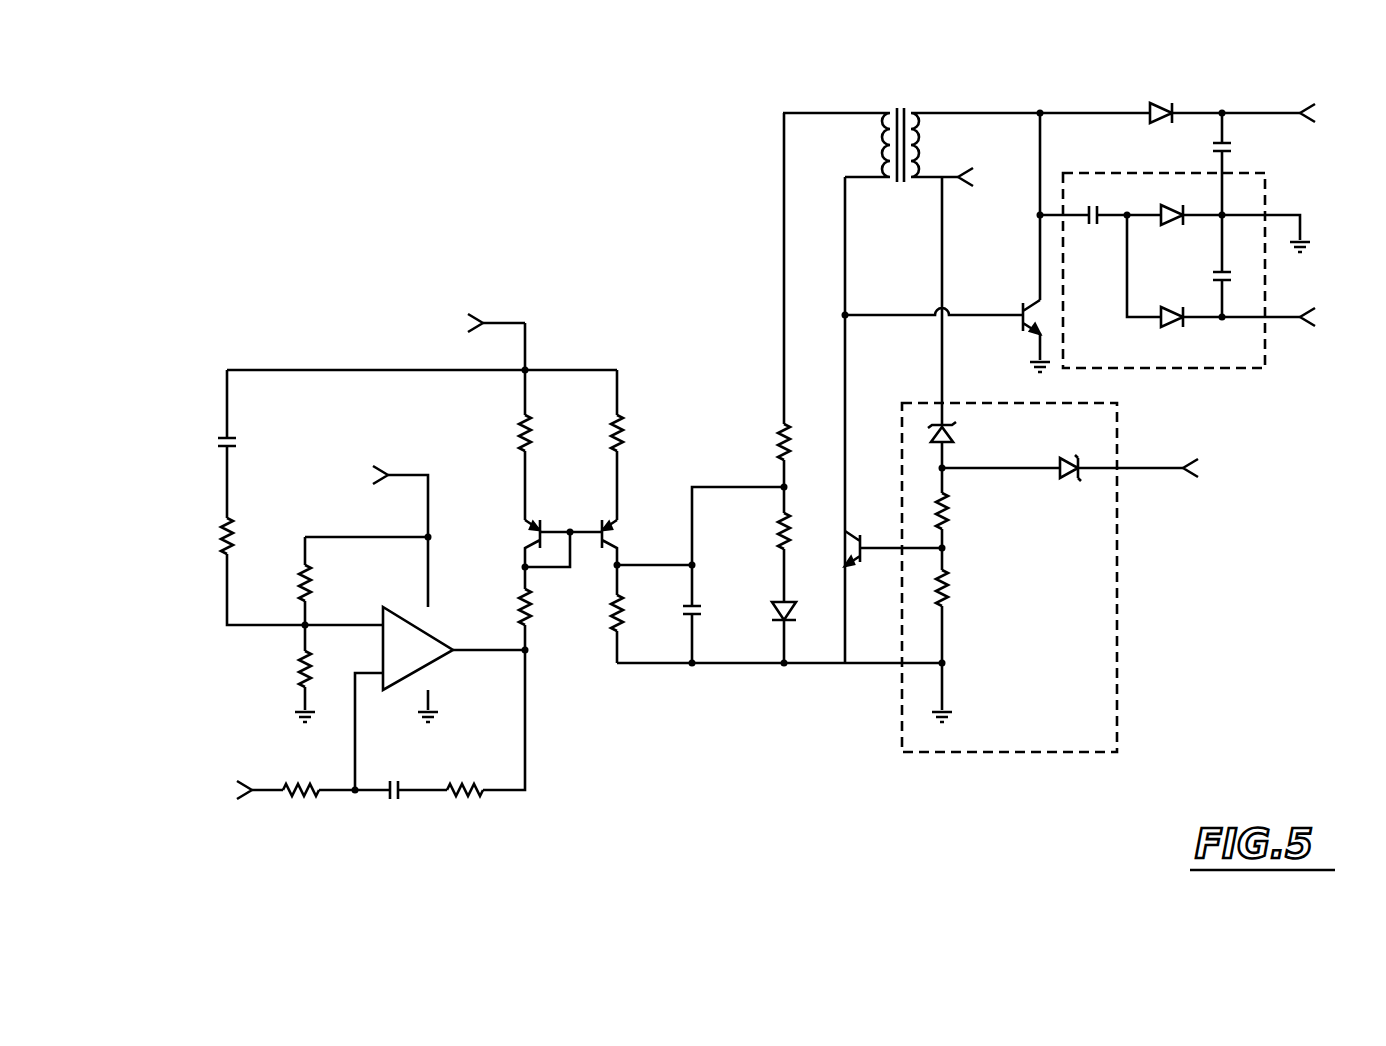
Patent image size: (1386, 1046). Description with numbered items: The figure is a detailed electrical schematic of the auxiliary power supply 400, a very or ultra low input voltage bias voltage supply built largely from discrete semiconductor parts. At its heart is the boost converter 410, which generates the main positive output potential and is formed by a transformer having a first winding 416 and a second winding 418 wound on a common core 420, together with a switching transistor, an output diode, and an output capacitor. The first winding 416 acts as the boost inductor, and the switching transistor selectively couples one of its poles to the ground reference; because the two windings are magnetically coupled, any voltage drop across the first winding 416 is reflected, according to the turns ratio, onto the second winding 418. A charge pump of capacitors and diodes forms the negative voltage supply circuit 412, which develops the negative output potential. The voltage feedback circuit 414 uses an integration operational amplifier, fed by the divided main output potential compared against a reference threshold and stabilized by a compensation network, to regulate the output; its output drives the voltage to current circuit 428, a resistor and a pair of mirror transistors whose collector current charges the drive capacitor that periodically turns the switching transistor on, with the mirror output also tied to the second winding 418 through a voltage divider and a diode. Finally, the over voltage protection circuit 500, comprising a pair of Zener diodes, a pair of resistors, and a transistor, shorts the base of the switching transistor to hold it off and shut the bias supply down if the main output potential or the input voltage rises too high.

The auxiliary power supply 400 is at (1213, 721).
The boost converter 410 is at (1073, 88).
The negative voltage supply circuit 412 is at (1220, 368).
The voltage feedback circuit 414 is at (347, 394).
The first winding 416 is at (927, 158).
The second winding 418 is at (869, 137).
The core 420 is at (903, 110).
The voltage to current circuit 428 is at (583, 681).
The over voltage protection circuit 500 is at (1060, 752).